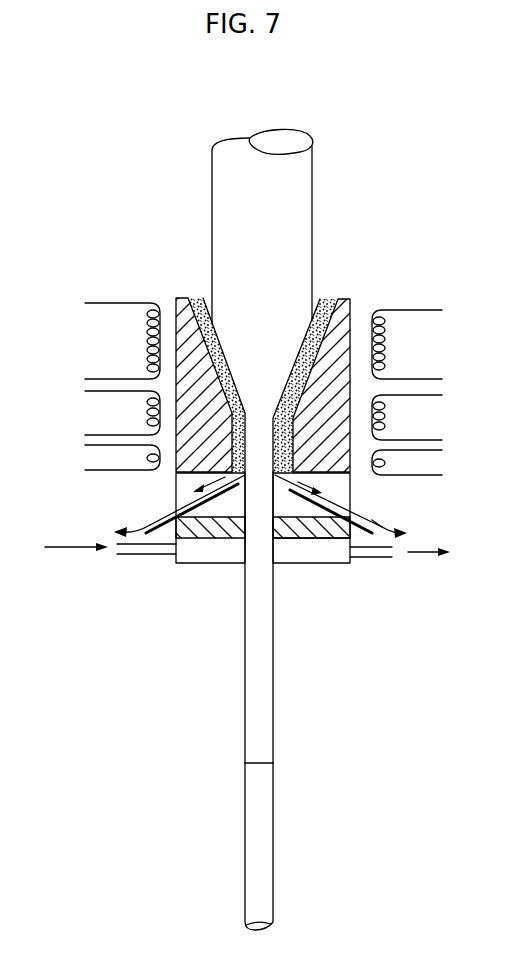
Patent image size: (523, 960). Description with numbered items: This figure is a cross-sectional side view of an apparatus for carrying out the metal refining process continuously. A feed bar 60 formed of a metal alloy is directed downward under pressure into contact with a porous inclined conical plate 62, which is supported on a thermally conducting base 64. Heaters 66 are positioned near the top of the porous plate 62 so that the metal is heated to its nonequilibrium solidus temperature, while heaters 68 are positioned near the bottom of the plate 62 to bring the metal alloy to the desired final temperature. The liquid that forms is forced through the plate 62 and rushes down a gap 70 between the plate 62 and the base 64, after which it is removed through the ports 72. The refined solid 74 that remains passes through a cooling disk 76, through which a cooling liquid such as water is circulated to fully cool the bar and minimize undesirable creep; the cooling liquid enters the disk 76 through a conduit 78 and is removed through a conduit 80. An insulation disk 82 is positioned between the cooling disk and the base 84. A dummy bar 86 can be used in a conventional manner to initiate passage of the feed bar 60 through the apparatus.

The feed bar 60 is at (305, 182).
The porous inclined conical plate 62 is at (194, 298).
The thermally conducting base 64 is at (340, 366).
The heaters 66 is at (102, 303).
The heaters 68 is at (102, 420).
The gap 70 is at (182, 298).
The ports 72 is at (150, 518).
The refined solid 74 is at (255, 575).
The cooling disk 76 is at (308, 557).
The conduit 78 is at (144, 553).
The conduit 80 is at (380, 557).
The insulation disk 82 is at (195, 517).
The base 84 is at (307, 506).
The dummy bar 86 is at (263, 790).